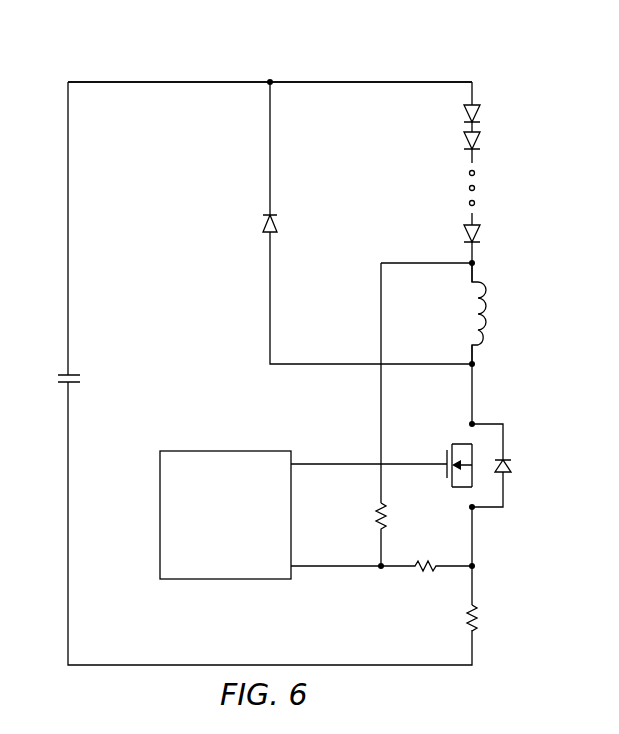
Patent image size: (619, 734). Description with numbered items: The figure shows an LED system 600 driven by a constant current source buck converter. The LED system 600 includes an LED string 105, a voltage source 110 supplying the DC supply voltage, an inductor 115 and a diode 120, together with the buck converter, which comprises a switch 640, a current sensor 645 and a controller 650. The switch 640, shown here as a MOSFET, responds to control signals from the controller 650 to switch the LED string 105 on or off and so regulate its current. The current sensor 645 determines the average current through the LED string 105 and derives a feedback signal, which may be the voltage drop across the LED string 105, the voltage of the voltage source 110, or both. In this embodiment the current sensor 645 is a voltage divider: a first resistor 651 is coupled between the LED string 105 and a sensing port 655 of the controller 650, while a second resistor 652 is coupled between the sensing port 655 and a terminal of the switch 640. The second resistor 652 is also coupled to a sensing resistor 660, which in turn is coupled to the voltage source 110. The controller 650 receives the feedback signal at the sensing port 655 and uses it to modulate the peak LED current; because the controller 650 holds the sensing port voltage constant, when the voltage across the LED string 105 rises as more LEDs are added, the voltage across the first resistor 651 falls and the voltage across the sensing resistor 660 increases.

The LED system 600 is at (158, 68).
The LED string 105 is at (495, 143).
The voltage source 110 is at (83, 380).
The inductor 115 is at (487, 301).
The diode 120 is at (262, 221).
The switch 640 is at (512, 465).
The current sensor 645 is at (370, 577).
The controller 650 is at (207, 548).
The first resistor (R1) 651 is at (378, 512).
The second resistor (R2) 652 is at (429, 560).
The sensing port 655 is at (302, 568).
The sensing resistor (Rs) 660 is at (468, 623).